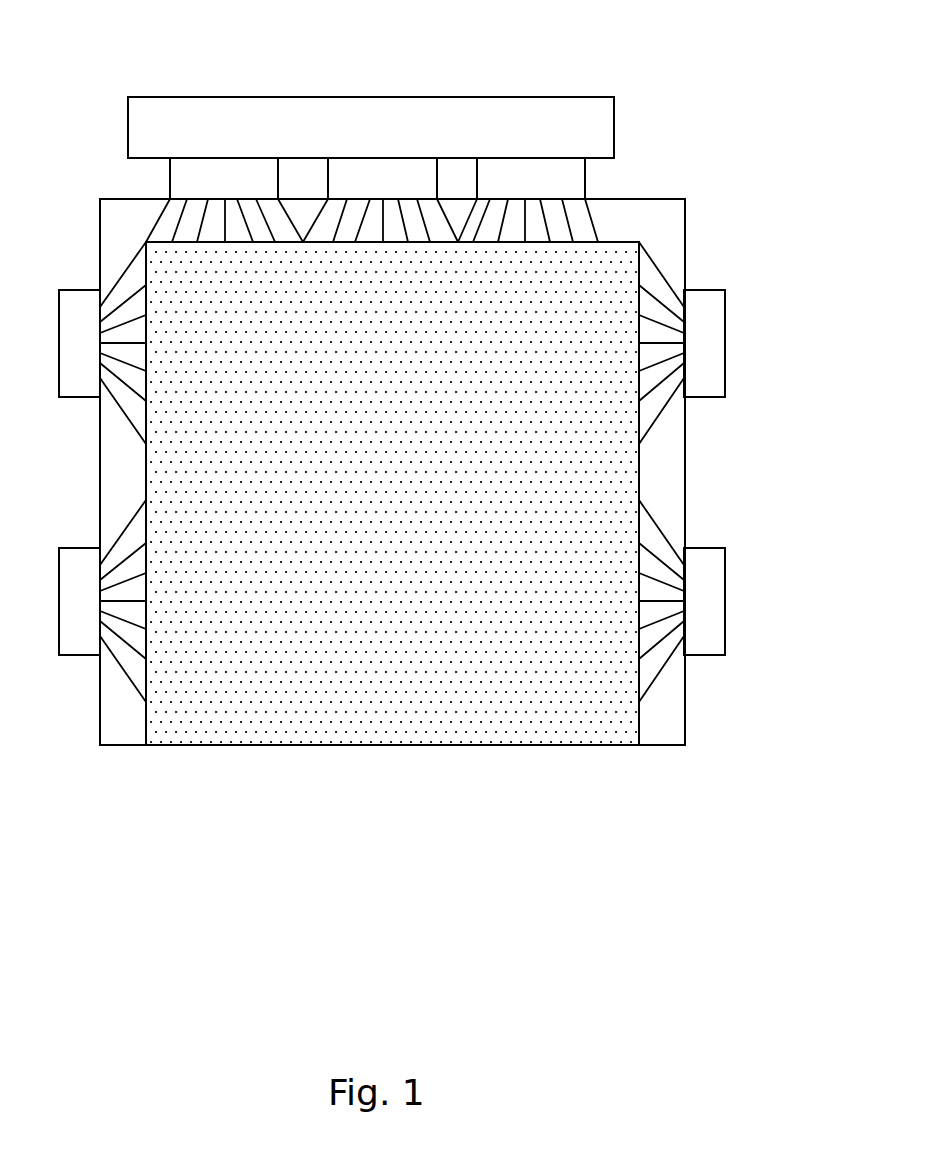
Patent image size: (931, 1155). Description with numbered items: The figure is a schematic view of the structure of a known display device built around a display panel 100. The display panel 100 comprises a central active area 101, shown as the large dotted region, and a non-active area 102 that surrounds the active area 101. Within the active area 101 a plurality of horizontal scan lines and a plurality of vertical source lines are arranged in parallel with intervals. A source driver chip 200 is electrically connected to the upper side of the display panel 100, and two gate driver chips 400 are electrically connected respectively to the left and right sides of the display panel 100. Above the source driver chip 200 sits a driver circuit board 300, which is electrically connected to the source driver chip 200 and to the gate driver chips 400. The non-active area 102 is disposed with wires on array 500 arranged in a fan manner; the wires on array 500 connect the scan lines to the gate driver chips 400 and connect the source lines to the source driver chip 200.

The display panel 100 is at (409, 567).
The active area 101 is at (403, 595).
The non-active area 102 is at (655, 720).
The source driver chip 200 is at (538, 182).
The driver circuit board 300 is at (370, 112).
The gate driver chips 400 is at (705, 350).
The wires on array (WOA) 500 is at (662, 532).